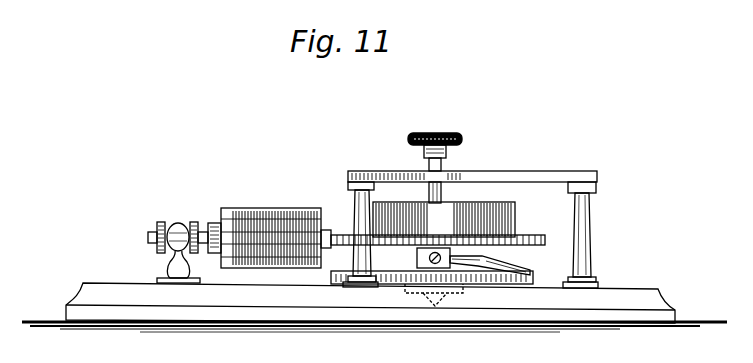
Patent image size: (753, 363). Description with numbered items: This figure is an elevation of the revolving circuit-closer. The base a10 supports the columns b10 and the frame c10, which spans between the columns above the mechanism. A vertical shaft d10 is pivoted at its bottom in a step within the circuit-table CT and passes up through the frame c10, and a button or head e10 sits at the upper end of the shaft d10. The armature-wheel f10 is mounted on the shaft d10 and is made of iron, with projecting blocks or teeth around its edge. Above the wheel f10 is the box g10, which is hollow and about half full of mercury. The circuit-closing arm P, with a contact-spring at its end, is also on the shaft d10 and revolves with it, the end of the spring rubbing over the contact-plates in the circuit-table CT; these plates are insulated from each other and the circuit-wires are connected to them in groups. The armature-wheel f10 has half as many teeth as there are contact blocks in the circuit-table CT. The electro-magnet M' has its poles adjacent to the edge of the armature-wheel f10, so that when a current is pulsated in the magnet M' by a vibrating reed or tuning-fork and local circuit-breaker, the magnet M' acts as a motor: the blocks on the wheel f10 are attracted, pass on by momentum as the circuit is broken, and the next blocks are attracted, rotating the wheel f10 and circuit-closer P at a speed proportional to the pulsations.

The base a10 is at (374, 307).
The electro-magnet M' is at (239, 237).
The columns b10 is at (477, 235).
The button or head e10 is at (472, 168).
The frame c10 is at (435, 143).
The vertical shaft d10 is at (444, 193).
The box g10 is at (444, 219).
The armature-wheel f10 is at (440, 232).
The circuit-closing arm P is at (504, 259).
The circuit-table CT is at (395, 281).